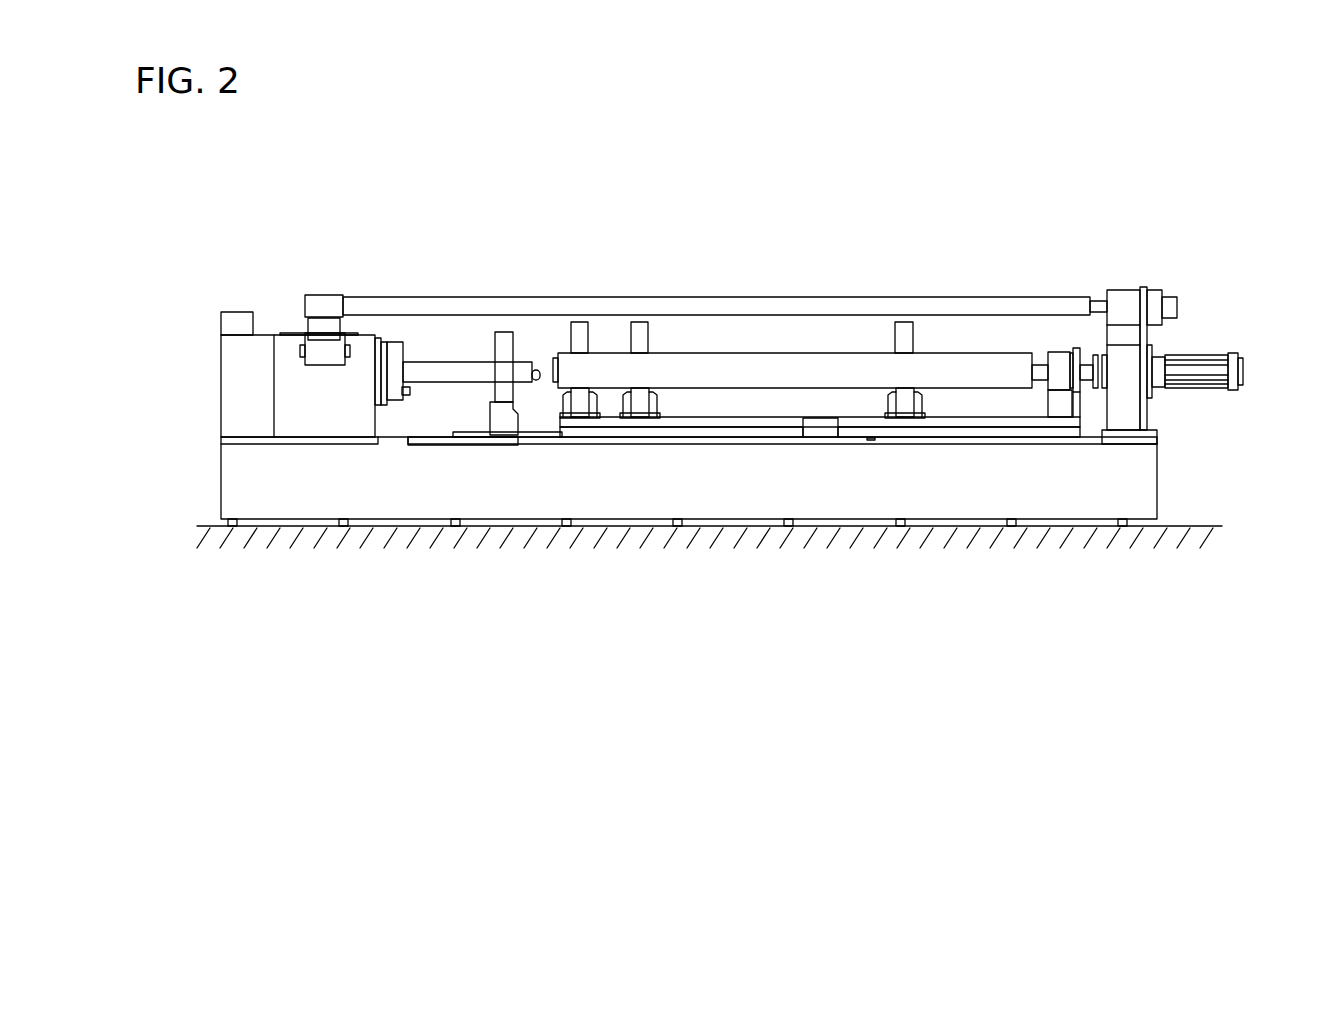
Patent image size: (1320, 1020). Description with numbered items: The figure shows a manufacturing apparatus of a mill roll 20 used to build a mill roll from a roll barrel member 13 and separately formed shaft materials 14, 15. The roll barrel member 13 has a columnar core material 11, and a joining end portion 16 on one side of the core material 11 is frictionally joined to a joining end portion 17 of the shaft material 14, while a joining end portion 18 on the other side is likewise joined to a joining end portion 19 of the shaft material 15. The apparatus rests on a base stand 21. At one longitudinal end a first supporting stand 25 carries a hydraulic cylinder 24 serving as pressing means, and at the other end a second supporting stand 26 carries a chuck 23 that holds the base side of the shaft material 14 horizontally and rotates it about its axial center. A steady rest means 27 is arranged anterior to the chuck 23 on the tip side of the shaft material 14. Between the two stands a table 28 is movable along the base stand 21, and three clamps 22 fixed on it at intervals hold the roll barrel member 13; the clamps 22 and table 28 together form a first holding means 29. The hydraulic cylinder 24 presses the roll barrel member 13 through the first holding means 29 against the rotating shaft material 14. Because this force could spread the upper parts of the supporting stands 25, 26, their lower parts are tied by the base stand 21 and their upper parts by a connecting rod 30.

The core material 11 is at (545, 360).
The roll barrel member 13 is at (826, 352).
The shaft material 14 is at (460, 356).
The shaft material 15 is at (467, 372).
The joining end portion 16 is at (548, 372).
The joining end portion 17 is at (537, 375).
The joining end portion 18 is at (536, 375).
The joining end portion 19 is at (504, 367).
The manufacturing apparatus of a mill roll 20 is at (1140, 235).
The base stand 21 is at (1165, 487).
The clamps 22 is at (583, 322).
The chuck 23 is at (396, 337).
The hydraulic cylinder 24 is at (1225, 352).
The first supporting stand 25 is at (1128, 412).
The second supporting stand 26 is at (290, 347).
The steady rest means 27 is at (488, 413).
The table 28 is at (948, 437).
The first holding means 29 is at (623, 443).
The connecting rod 30 is at (763, 307).